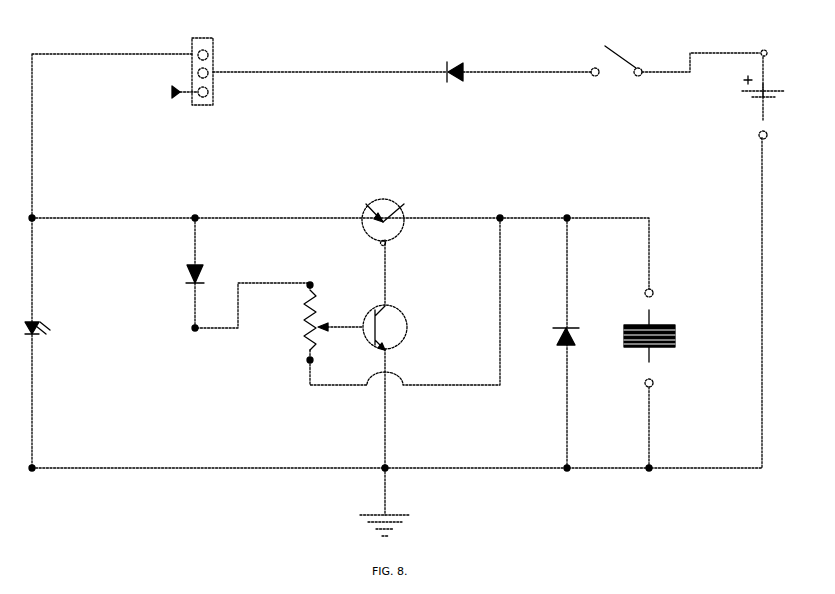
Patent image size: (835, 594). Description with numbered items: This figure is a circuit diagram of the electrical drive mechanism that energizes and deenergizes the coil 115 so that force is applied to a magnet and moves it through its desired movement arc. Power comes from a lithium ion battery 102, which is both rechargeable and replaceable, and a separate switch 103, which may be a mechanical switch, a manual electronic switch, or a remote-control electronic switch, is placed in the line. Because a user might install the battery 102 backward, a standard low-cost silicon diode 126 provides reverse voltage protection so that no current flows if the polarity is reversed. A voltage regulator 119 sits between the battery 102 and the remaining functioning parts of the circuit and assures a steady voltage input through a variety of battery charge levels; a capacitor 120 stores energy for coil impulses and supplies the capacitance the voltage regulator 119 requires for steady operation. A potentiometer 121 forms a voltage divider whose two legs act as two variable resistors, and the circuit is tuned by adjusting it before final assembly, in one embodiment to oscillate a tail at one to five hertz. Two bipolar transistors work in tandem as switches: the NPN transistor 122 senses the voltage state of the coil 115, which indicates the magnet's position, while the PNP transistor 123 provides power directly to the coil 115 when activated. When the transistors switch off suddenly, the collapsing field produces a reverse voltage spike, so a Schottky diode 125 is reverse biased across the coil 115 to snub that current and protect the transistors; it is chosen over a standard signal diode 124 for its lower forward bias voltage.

The lithium ion battery 102 is at (781, 94).
The switch 103 is at (610, 58).
The coil 115 is at (666, 378).
The voltage regulator 119 is at (192, 59).
The capacitor 120 is at (55, 329).
The potentiometer 121 is at (297, 322).
The NPN transistor 122 is at (374, 326).
The PNP transistor 123 is at (383, 213).
The standard signal diode 124 is at (234, 274).
The Schottky diode 125 is at (558, 343).
The silicon diode 126 is at (454, 59).